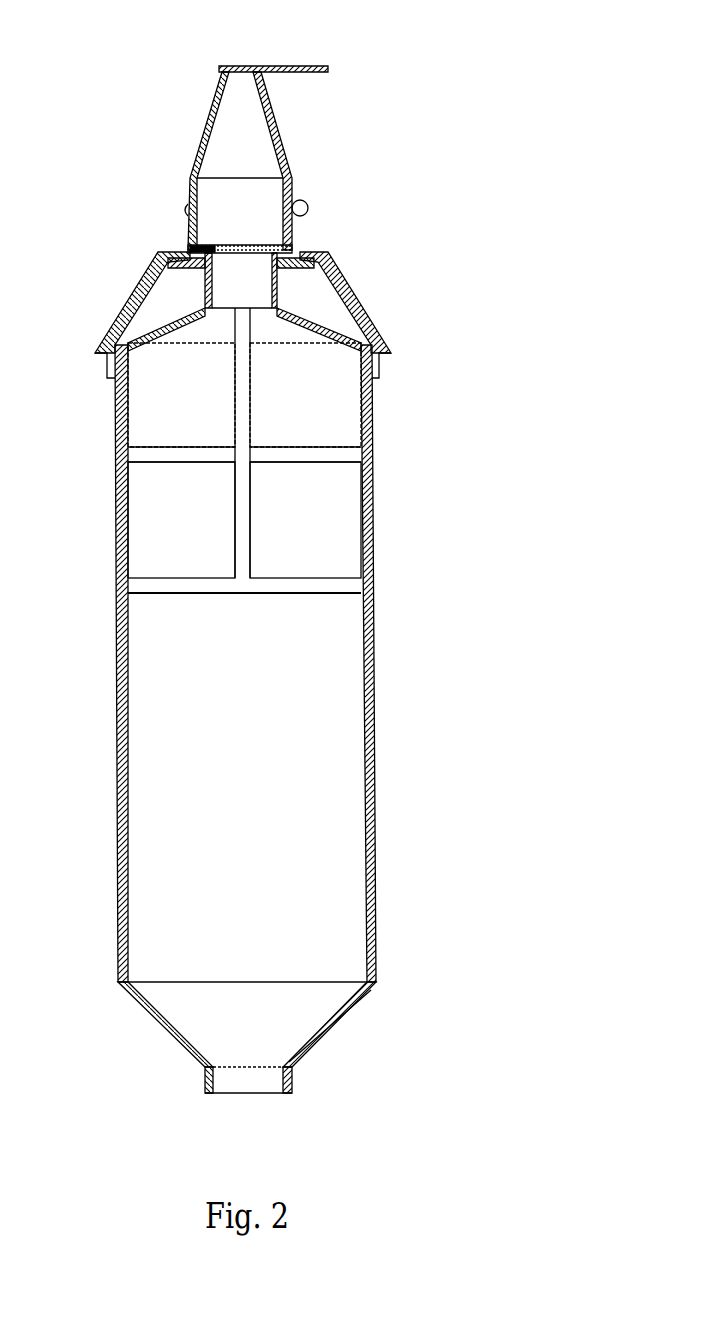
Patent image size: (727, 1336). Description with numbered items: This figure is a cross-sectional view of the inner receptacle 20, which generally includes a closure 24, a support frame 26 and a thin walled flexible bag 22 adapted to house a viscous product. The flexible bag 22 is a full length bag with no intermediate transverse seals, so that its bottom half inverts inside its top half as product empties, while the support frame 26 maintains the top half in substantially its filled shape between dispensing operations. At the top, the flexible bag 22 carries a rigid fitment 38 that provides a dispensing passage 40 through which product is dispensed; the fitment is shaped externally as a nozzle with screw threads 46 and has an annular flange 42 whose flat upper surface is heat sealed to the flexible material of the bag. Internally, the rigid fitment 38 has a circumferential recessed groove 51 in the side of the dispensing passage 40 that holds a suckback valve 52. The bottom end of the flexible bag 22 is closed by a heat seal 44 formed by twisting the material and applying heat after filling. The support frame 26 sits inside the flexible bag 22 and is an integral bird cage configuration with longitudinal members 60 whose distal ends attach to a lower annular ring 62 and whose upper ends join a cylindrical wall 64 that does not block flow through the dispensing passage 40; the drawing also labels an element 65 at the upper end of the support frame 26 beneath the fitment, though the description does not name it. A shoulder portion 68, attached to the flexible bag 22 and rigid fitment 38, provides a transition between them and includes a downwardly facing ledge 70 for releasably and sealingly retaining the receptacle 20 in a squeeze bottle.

The receptacle 20 is at (392, 588).
The flexible bag 22 is at (372, 708).
The closure 24 is at (282, 65).
The support frame 26 is at (330, 454).
The rigid fitment 38 is at (298, 152).
The dispensing passage 40 is at (247, 137).
The annular flange 42 is at (180, 252).
The heat seal 44 is at (243, 1083).
The screw threads 46 is at (308, 201).
The recessed groove 51 is at (200, 244).
The suckback valve 52 is at (265, 245).
The longitudinal members 60 is at (242, 528).
The lower annular ring 62 is at (323, 592).
The cylindrical wall 64 is at (218, 453).
The central box 65 is at (228, 297).
The shoulder portion 68 is at (357, 302).
The ledge 70 is at (387, 353).